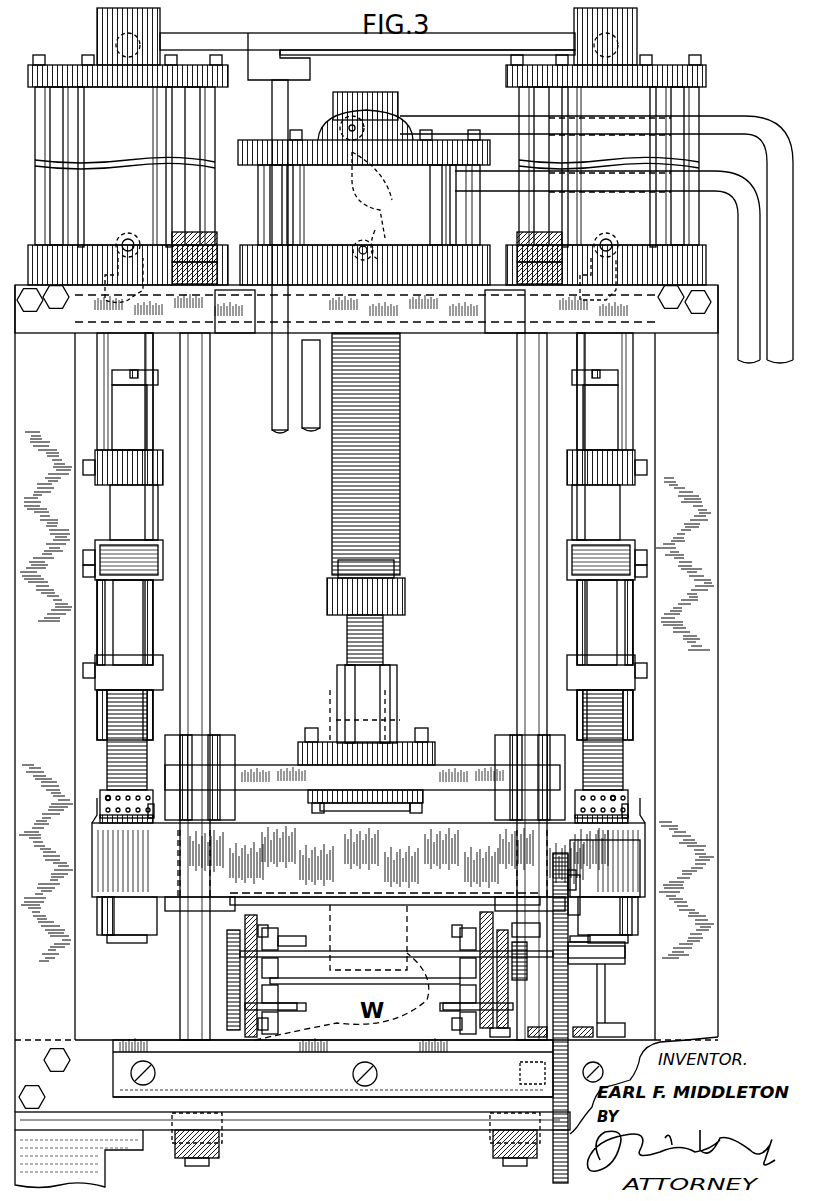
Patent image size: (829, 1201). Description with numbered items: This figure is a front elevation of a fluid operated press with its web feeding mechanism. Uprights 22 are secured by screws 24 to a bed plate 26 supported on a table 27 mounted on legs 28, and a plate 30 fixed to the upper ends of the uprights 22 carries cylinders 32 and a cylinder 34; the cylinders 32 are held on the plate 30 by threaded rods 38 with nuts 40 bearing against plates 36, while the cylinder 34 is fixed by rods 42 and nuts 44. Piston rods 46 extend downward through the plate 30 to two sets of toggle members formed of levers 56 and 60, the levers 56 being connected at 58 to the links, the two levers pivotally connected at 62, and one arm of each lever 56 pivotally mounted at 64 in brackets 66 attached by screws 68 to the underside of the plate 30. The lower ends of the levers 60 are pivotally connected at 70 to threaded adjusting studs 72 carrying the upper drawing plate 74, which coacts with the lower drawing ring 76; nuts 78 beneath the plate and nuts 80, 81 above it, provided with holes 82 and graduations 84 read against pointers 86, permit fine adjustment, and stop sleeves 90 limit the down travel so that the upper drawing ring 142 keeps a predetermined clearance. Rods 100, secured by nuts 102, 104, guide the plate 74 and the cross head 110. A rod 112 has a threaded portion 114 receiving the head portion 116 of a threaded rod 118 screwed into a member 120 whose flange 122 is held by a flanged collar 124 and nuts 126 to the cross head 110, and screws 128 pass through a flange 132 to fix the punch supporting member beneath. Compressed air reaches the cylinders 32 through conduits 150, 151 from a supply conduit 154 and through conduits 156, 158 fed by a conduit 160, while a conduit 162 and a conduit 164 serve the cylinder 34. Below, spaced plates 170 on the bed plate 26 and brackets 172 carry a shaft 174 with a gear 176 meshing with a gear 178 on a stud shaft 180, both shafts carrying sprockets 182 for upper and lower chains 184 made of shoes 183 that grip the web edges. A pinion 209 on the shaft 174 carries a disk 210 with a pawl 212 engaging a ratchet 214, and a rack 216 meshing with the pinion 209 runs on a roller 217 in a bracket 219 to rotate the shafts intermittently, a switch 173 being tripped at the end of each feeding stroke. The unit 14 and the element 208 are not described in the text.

The press unit 14 is at (628, 862).
The uprights 22 is at (710, 447).
The screws 24 is at (56, 305).
The bed plate 26 is at (308, 1100).
The table 27 is at (306, 1130).
The legs 28 is at (98, 1173).
The plate 30 is at (452, 333).
The cylinders 32 is at (680, 105).
The cylinder 34 is at (318, 192).
The plates 36 is at (58, 65).
The threaded rods 38 is at (84, 116).
The nuts 40 is at (38, 57).
The rods 42 is at (292, 212).
The nuts 44 is at (248, 140).
The piston rods 46 is at (160, 512).
The levers 56 is at (115, 504).
The connection 58 is at (88, 578).
The levers 60 is at (148, 630).
The pivotal connection 62 is at (83, 555).
The pivotal mounting 64 is at (83, 468).
The brackets 66 is at (100, 413).
The screws 68 is at (118, 380).
The pivotal connection 70 is at (83, 672).
The threaded adjusting studs 72 is at (108, 750).
The upper drawing plate 74 is at (97, 884).
The lower drawing ring 76 is at (367, 1073).
The nuts 78 is at (105, 920).
The nuts 80 is at (100, 800).
The nuts 81 is at (154, 823).
The holes 82 is at (108, 796).
The graduations 84 is at (126, 823).
The pointers 86 is at (96, 823).
The stop sleeves 90 is at (160, 603).
The rods 100 is at (210, 510).
The nuts 102 is at (222, 1149).
The nuts 104 is at (212, 246).
The cross head 110 is at (240, 770).
The rod 112 is at (400, 462).
The threaded portion 114 is at (395, 557).
The head portion 116 is at (402, 596).
The threaded rod 118 is at (385, 636).
The member 120 is at (397, 676).
The flange 122 is at (329, 690).
The flanged collar 124 is at (440, 754).
The nuts 126 is at (312, 728).
The screws 128 is at (312, 806).
The flange 132 is at (424, 806).
The upper drawing ring 142 is at (380, 897).
The conduit 150 is at (222, 30).
The conduit 151 is at (403, 52).
The supply conduit 154 is at (272, 114).
The conduit 156 is at (249, 333).
The conduit 158 is at (498, 320).
The conduit 160 is at (312, 430).
The conduit 162 is at (466, 113).
The conduit 164 is at (500, 190).
The plates 170 is at (505, 915).
The brackets 172 is at (398, 1098).
The switch 173 is at (535, 1082).
The shaft 174 is at (240, 956).
The gear 176 is at (480, 908).
The gear 178 is at (245, 1030).
The stud shaft 180 is at (245, 1006).
The sprockets 182 is at (452, 946).
The shoes 183 is at (300, 976).
The chains 184 is at (270, 913).
The motor housing 208 is at (620, 965).
The pinion 209 is at (600, 972).
The disk 210 is at (606, 990).
The pawl 212 is at (527, 920).
The ratchet 214 is at (498, 1046).
The rack 216 is at (568, 861).
The roller 217 is at (580, 884).
The bracket 219 is at (576, 872).